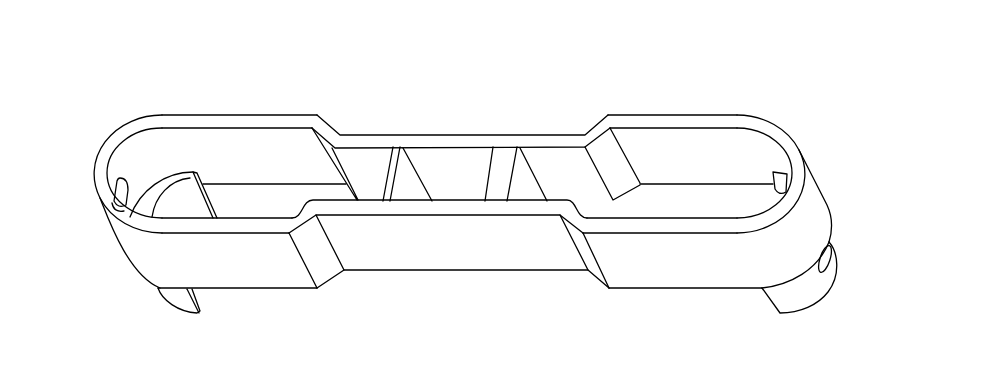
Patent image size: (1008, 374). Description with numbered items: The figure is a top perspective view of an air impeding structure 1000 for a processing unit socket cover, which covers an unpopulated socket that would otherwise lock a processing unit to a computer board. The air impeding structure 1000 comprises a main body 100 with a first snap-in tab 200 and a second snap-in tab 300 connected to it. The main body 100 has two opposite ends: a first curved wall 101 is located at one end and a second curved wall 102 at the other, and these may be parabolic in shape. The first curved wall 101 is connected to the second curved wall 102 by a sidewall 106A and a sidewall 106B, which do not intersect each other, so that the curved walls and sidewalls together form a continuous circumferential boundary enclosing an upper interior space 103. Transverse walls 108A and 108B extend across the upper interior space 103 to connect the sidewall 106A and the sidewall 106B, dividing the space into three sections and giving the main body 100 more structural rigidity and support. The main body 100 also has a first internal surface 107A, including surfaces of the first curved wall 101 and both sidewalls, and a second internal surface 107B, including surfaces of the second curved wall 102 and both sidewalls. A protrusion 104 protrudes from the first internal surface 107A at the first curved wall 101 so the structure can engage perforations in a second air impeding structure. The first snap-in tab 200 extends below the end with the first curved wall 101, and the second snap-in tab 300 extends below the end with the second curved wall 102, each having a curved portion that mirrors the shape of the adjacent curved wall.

The air impeding structure 1000 is at (648, 88).
The main body 100 is at (556, 125).
The first curved wall 101 is at (97, 167).
The second curved wall 102 is at (815, 190).
The interior space 103 is at (275, 200).
The protrusion 104 is at (115, 189).
The sidewall 106A is at (458, 255).
The sidewall 106B is at (290, 113).
The first internal surface 107A is at (230, 148).
The second internal surface 107B is at (720, 147).
The transverse wall 108A is at (393, 151).
The transverse wall 108B is at (507, 151).
The first snap-in tab 200 is at (170, 304).
The second snap-in tab 300 is at (823, 297).